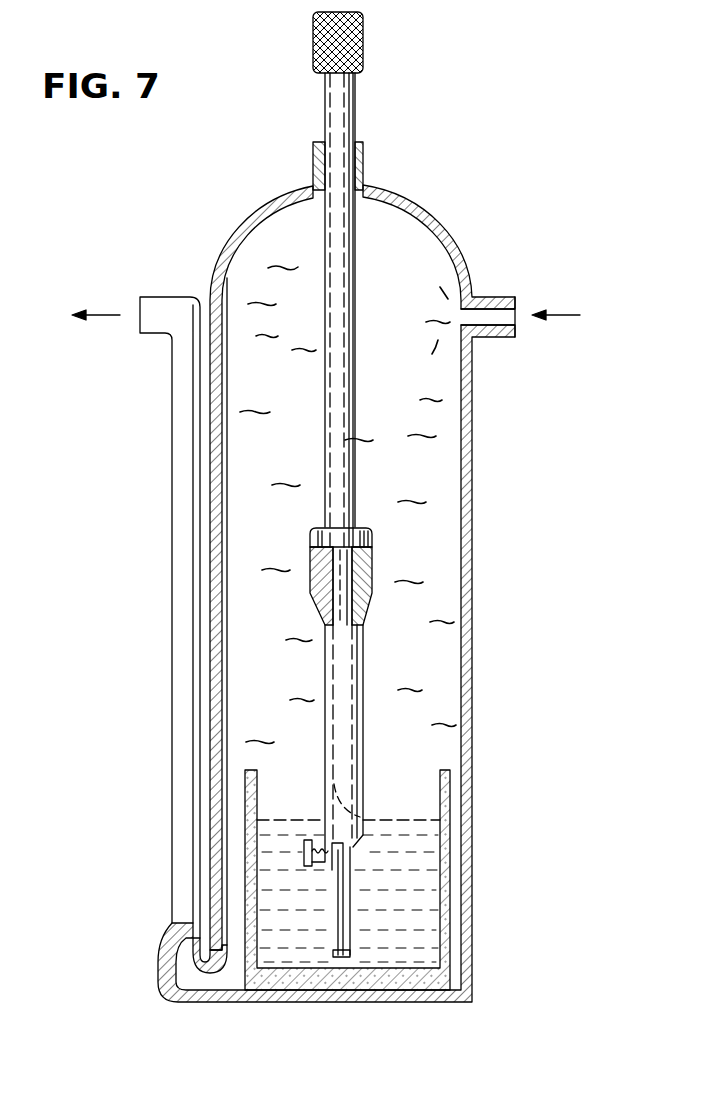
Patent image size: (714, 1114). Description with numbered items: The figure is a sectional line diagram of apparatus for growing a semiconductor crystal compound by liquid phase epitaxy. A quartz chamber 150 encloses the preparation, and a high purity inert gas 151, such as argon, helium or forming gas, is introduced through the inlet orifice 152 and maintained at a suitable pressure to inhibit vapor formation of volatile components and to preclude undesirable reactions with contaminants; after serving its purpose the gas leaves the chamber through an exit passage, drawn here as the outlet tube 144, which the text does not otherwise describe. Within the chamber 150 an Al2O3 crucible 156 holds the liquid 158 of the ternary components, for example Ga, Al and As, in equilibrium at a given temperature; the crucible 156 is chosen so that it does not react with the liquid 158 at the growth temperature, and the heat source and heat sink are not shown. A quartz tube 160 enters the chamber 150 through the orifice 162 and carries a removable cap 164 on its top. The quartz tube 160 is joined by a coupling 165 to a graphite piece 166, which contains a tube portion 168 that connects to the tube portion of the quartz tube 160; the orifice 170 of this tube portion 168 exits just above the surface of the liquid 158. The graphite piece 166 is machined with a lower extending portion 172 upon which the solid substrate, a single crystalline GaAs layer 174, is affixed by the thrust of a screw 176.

The outlet tube 144 is at (165, 297).
The quartz chamber 150 is at (472, 522).
The inert gas 151 is at (104, 315).
The orifice 152 is at (497, 298).
The crucible 156 is at (450, 860).
The liquid 158 is at (284, 834).
The quartz tube 160 is at (357, 100).
The orifice 162 is at (363, 163).
The removable cap 164 is at (364, 30).
The coupling 165 is at (370, 530).
The graphite piece 166 is at (362, 661).
The tube portion 168 is at (343, 614).
The orifice 170 is at (359, 812).
The lower extending portion 172 is at (350, 935).
The single crystalline GaAs layer 174 is at (338, 957).
The screw 176 is at (306, 843).